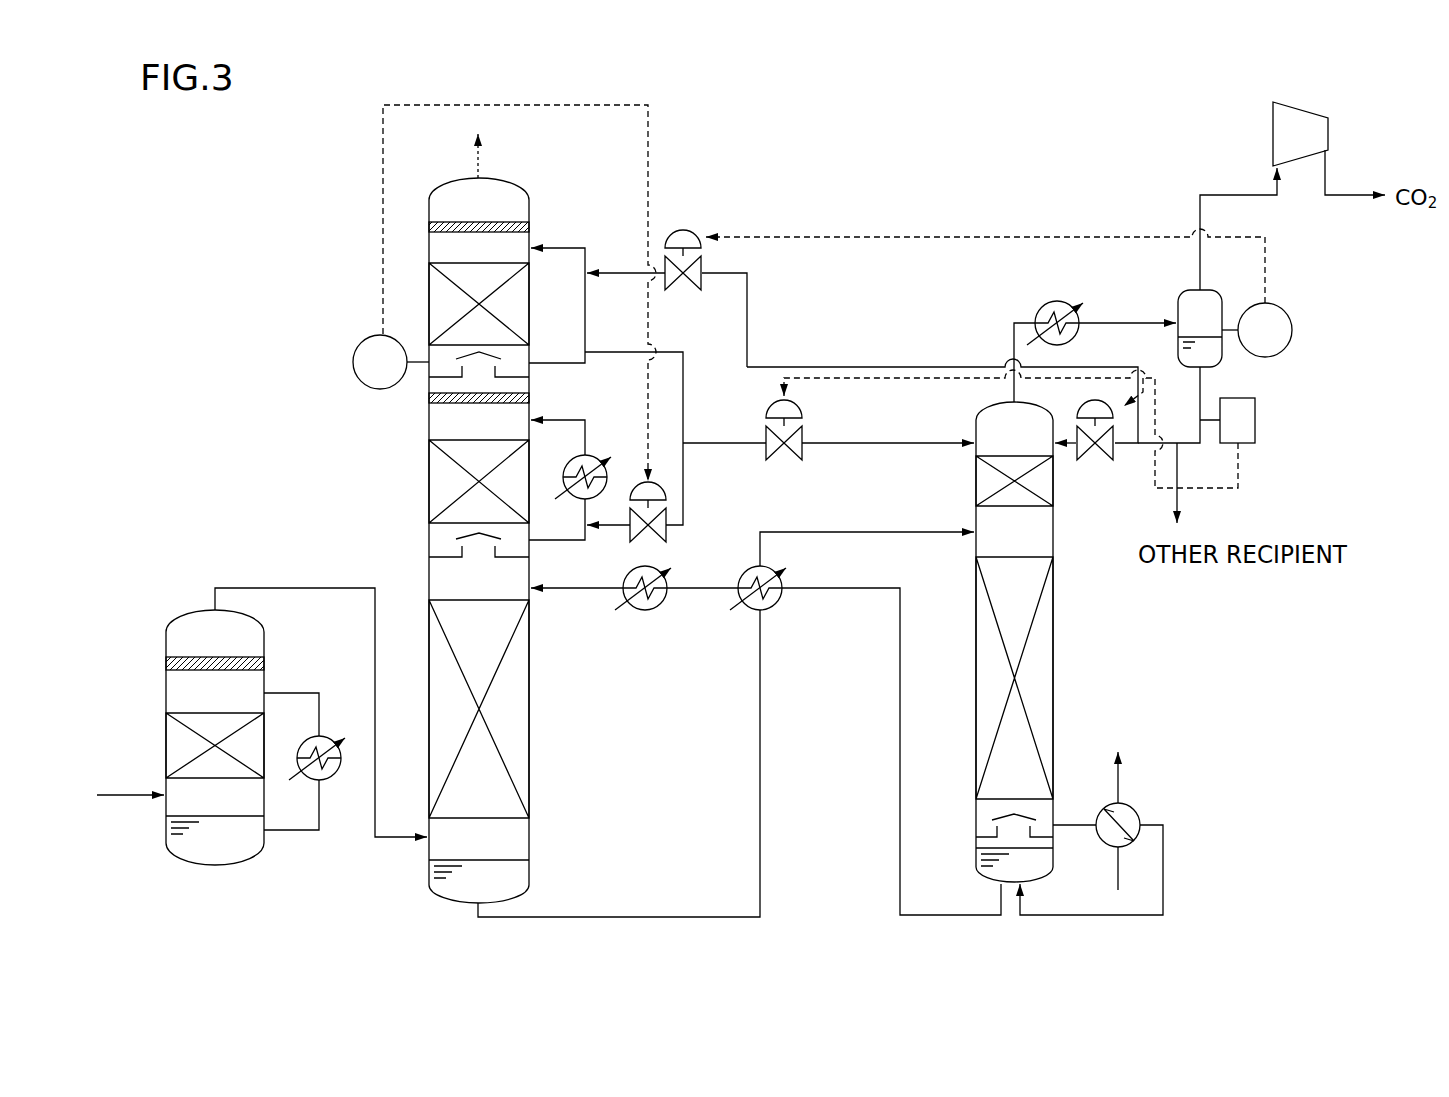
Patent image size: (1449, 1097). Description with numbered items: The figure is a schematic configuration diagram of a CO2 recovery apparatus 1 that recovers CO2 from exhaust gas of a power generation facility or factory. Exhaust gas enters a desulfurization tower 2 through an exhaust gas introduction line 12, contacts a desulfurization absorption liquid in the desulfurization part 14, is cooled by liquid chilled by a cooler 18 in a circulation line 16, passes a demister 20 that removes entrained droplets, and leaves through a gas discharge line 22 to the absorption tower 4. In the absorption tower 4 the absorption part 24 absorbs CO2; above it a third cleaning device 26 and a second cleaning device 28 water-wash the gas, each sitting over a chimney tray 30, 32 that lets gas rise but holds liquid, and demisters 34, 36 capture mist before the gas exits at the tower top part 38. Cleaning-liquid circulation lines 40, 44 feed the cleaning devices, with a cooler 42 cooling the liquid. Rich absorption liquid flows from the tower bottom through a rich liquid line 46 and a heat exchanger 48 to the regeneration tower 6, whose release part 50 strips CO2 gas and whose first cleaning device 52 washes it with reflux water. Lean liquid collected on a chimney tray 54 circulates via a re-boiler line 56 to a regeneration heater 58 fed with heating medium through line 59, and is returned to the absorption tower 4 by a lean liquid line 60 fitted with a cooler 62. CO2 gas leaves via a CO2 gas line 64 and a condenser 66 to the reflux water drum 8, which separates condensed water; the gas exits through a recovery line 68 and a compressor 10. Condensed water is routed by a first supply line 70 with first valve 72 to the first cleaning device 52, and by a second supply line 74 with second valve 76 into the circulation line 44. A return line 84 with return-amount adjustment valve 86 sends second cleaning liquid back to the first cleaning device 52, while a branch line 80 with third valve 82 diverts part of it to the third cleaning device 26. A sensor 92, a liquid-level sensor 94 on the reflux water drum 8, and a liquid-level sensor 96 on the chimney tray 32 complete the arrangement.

The CO2 recovery apparatus 1 is at (1396, 86).
The desulfurization tower 2 is at (183, 612).
The absorption tower 4 is at (512, 186).
The regeneration tower 6 is at (1058, 538).
The reflux water drum 8 is at (1180, 291).
The compressor 10 is at (1300, 112).
The exhaust gas introduction line 12 is at (121, 797).
The desulfurization part 14 is at (178, 756).
The circulation line 16 is at (301, 832).
The cooler 18 is at (325, 780).
The demister 20 is at (185, 656).
The gas discharge line 22 is at (291, 588).
The absorption part 24 is at (450, 716).
The third cleaning device 26 is at (440, 484).
The second cleaning device 28 is at (446, 302).
The chimney tray 30 is at (448, 558).
The chimney tray 32 is at (440, 378).
The demister 34 is at (440, 405).
The demister 36 is at (452, 232).
The tower top part 38 is at (476, 160).
The cleaning-liquid circulation line 40 is at (566, 542).
The cooler 42 is at (596, 455).
The cleaning-liquid circulation line 44 is at (566, 367).
The rich liquid line 46 is at (619, 919).
The heat exchanger 48 is at (776, 572).
The release part 50 is at (985, 678).
The first cleaning device 52 is at (985, 480).
The chimney tray 54 is at (978, 840).
The re-boiler line 56 is at (1165, 866).
The regeneration heater 58 is at (1133, 807).
The line 59 is at (1125, 782).
The lean liquid line 60 is at (899, 748).
The cooler 62 is at (645, 612).
The CO2 gas line 64 is at (1012, 350).
The condenser 66 is at (1042, 306).
The recovery line 68 is at (1234, 194).
The first supply line 70 is at (1127, 448).
The first valve 72 is at (1090, 401).
The second supply line 74 is at (838, 366).
The second valve 76 is at (683, 229).
The branch line 80 is at (680, 522).
The third valve 82 is at (668, 488).
The return line 84 is at (858, 445).
The return-amount adjustment valve 86 is at (803, 404).
The sensor 92 is at (1256, 420).
The liquid-level sensor 94 is at (1293, 330).
The liquid-level sensor 96 is at (352, 362).